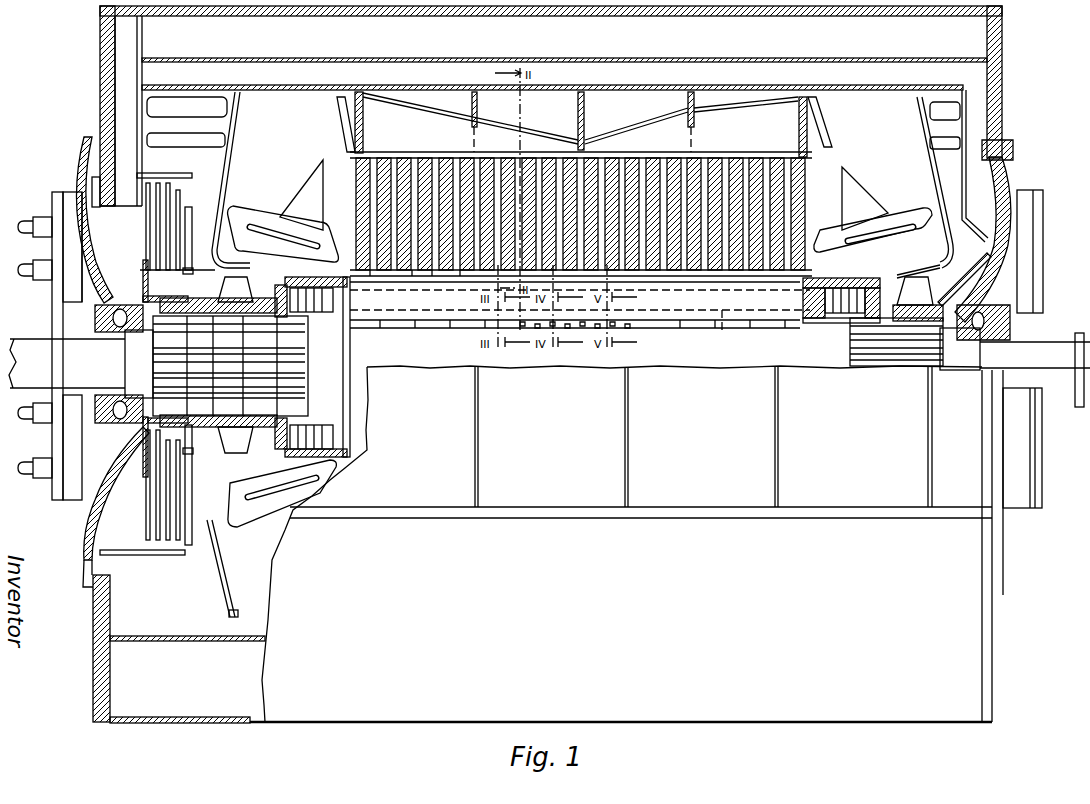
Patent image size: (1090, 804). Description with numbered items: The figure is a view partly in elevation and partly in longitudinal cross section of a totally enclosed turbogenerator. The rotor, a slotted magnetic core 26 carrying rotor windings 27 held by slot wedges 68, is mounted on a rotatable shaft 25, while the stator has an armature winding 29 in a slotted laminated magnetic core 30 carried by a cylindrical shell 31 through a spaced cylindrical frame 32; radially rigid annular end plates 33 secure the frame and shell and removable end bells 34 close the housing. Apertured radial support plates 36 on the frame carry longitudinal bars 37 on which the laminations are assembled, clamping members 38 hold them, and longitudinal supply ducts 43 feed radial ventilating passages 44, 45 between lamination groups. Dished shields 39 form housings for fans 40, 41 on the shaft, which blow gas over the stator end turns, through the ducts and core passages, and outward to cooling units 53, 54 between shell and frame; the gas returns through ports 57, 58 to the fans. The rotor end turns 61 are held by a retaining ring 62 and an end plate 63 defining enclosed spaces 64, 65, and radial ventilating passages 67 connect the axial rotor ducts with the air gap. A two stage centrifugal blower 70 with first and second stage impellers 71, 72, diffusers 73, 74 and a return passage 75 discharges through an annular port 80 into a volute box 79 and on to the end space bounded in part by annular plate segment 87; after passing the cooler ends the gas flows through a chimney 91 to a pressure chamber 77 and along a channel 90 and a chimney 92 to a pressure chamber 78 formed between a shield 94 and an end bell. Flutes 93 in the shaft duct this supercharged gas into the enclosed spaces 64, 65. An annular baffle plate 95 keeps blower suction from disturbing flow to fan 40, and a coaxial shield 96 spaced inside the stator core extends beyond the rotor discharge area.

The rotatable shaft 25 is at (24, 340).
The slotted magnetic core 26 is at (690, 370).
The rotor windings 27 is at (722, 331).
The armature winding 29 is at (292, 218).
The slotted laminated magnetic core 30 is at (725, 152).
The cylindrical shell 31 is at (548, 16).
The cylindrical frame 32 is at (438, 87).
The annular end plates 33 is at (101, 38).
The end bells 34 is at (90, 167).
The radial support plates 36 is at (477, 100).
The longitudinal bars 37 is at (408, 152).
The clamping members 38 is at (338, 115).
The shields 39 is at (234, 130).
The fan 40 is at (250, 288).
The fan 41 is at (908, 275).
The longitudinal supply ducts 43 is at (538, 140).
The radial ventilating passage 44 is at (390, 272).
The radial ventilating passage 45 is at (416, 272).
The cooling unit 53 is at (68, 497).
The cooling unit 54 is at (53, 210).
The ports 57 is at (195, 98).
The ports 58 is at (930, 142).
The end turns 61 is at (308, 420).
The retaining ring 62 is at (322, 278).
The end plate 63 is at (278, 440).
The enclosed space 64 is at (326, 313).
The enclosed space 65 is at (838, 323).
The radial ventilating passages 67 is at (640, 330).
The slot wedges 68 is at (418, 330).
The two stage centrifugal blower 70 is at (140, 270).
The first stage impeller 71 is at (186, 426).
The second stage impeller 72 is at (146, 449).
The first diffuser 73 is at (188, 210).
The second diffuser 74 is at (148, 232).
The return passage 75 is at (158, 496).
The pressure chamber 77 is at (93, 247).
The pressure chamber 78 is at (992, 292).
The volute box 79 is at (93, 186).
The annular port 80 is at (157, 173).
The annular plate segment 87 is at (142, 54).
The channel 90 is at (340, 56).
The chimney 91 is at (118, 98).
The chimney 92 is at (1003, 96).
The flutes 93 is at (305, 382).
The shield 94 is at (962, 276).
The annular baffle plate 95 is at (188, 274).
The coaxial shield 96 is at (638, 280).